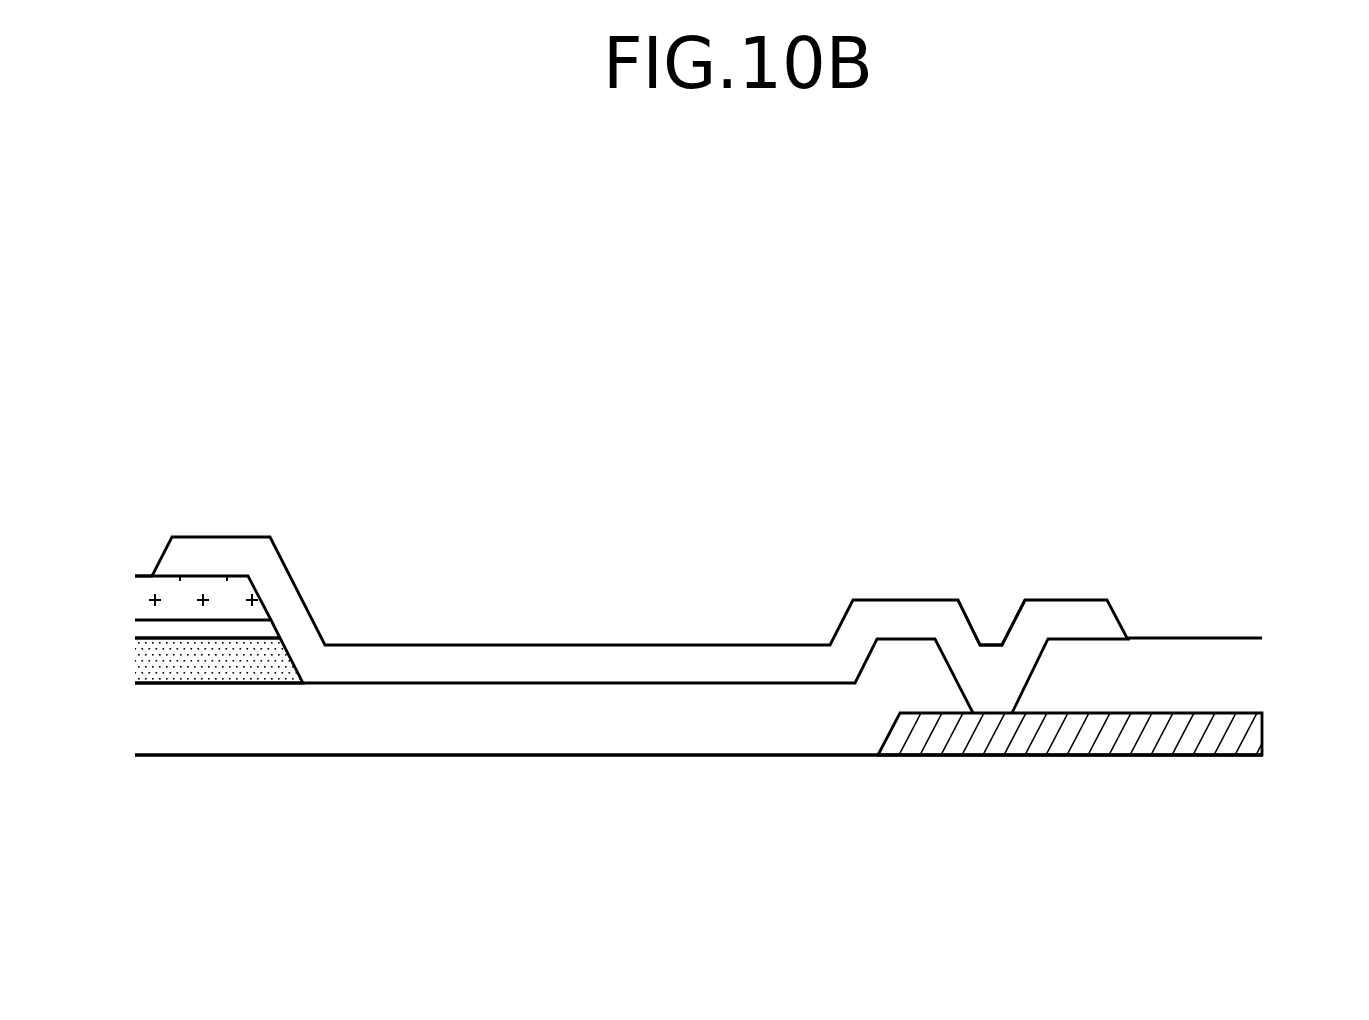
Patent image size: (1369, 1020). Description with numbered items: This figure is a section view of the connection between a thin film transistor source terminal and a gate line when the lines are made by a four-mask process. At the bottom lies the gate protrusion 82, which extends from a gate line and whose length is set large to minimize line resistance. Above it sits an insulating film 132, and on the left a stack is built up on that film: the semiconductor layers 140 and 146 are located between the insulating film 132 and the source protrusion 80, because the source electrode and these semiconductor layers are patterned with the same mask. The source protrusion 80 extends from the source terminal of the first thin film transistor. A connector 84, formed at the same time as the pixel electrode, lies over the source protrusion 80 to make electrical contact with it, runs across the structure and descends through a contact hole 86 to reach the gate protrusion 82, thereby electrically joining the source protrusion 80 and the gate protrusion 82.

The source protrusion 80 is at (141, 590).
The gate protrusion 82 is at (927, 758).
The connector 84 is at (561, 647).
The contact hole 86 is at (993, 600).
The insulating film 132 is at (1258, 703).
The semiconductor layer 140 is at (141, 670).
The semiconductor layer 146 is at (141, 630).